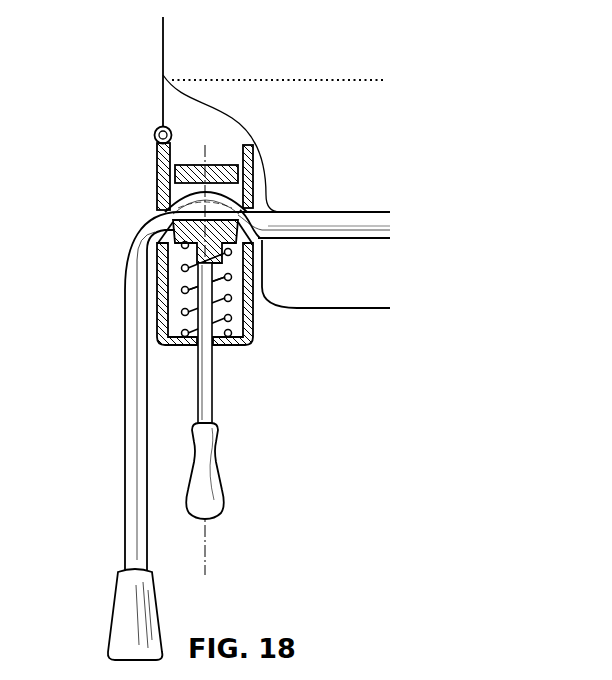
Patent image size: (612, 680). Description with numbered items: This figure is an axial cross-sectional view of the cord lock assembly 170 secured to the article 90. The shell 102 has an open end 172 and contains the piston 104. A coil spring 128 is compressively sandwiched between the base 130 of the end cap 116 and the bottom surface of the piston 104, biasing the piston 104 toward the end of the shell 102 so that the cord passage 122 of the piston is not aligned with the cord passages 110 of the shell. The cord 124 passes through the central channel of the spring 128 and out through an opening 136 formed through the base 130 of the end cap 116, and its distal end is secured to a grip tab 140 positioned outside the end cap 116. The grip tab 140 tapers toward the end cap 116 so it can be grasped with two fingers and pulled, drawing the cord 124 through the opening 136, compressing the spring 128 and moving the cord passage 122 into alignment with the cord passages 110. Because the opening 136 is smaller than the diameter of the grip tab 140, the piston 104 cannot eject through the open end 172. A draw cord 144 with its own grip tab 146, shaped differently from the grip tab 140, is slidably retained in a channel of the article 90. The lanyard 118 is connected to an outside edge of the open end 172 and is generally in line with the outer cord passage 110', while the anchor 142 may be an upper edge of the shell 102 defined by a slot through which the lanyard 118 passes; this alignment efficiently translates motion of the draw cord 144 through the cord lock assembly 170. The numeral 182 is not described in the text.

The article 90 is at (234, 60).
The open end 172 is at (197, 133).
The lanyard 118 is at (162, 100).
The anchor 142 is at (155, 130).
The piston 104 is at (228, 163).
The shell 102 is at (255, 177).
The cord passage 122 is at (265, 202).
The cord passages 110 is at (324, 267).
The outer cord passage 110' is at (165, 229).
The cord lock assembly 170 is at (73, 260).
The draw cord 144 is at (124, 352).
The end cap 116 is at (175, 343).
The base 130 is at (248, 340).
The coil spring 128 is at (234, 328).
The cord 124 is at (207, 385).
The opening 136 is at (211, 347).
The grip tab 140 is at (218, 502).
The grip tab 146 is at (122, 620).
The adjacent figure element 182 is at (0, 672).